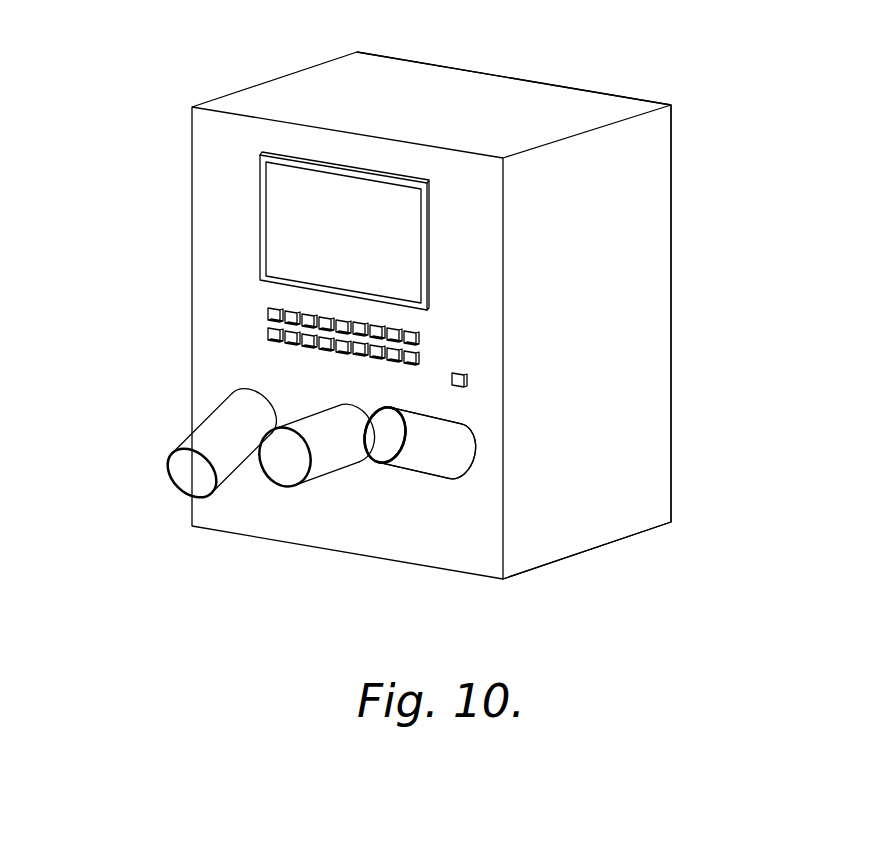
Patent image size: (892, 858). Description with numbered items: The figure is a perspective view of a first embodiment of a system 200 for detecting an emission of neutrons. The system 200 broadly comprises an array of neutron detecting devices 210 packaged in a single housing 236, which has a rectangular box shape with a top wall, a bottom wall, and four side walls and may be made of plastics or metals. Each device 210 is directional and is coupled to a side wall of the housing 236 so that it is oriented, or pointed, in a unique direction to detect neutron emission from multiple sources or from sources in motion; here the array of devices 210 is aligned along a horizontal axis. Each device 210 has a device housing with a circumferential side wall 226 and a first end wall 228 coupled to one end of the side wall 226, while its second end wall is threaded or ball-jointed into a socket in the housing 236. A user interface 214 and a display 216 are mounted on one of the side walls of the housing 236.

The system 200 is at (192, 72).
The housing 236 is at (570, 70).
The display 216 is at (332, 157).
The user interface 214 is at (433, 335).
The neutron detecting devices 210 is at (180, 428).
The first end wall 228 is at (387, 420).
The circumferential side wall 226 is at (453, 455).